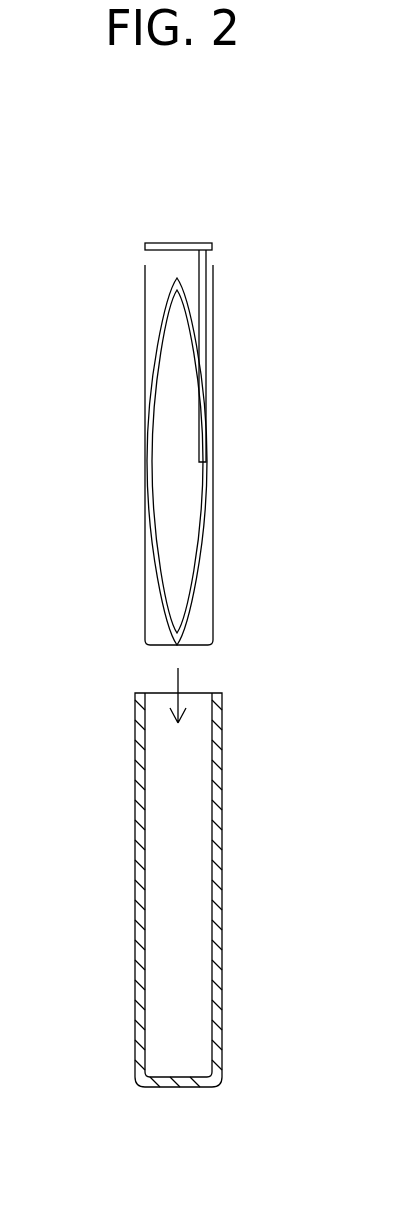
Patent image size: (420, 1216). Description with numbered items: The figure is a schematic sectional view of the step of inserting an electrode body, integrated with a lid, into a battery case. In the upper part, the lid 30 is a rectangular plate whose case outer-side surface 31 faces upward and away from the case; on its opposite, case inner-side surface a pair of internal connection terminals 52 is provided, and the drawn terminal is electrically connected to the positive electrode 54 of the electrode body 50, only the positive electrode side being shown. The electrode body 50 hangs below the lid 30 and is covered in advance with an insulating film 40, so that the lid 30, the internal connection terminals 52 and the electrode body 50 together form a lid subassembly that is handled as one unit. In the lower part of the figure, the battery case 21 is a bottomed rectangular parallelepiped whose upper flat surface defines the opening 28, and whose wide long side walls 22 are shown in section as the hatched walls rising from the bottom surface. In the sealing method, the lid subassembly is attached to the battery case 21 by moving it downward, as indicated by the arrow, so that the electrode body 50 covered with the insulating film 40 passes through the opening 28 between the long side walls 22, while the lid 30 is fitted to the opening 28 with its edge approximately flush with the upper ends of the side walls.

The lid 30 is at (166, 398).
The case outer-side surface 31 is at (187, 243).
The internal connection terminals 52 is at (207, 258).
The insulating film 40 is at (145, 587).
The electrode body 50 is at (202, 602).
The positive electrode 54 is at (183, 487).
The opening 28 is at (203, 686).
The long side walls 22 is at (222, 852).
The battery case 21 is at (183, 890).